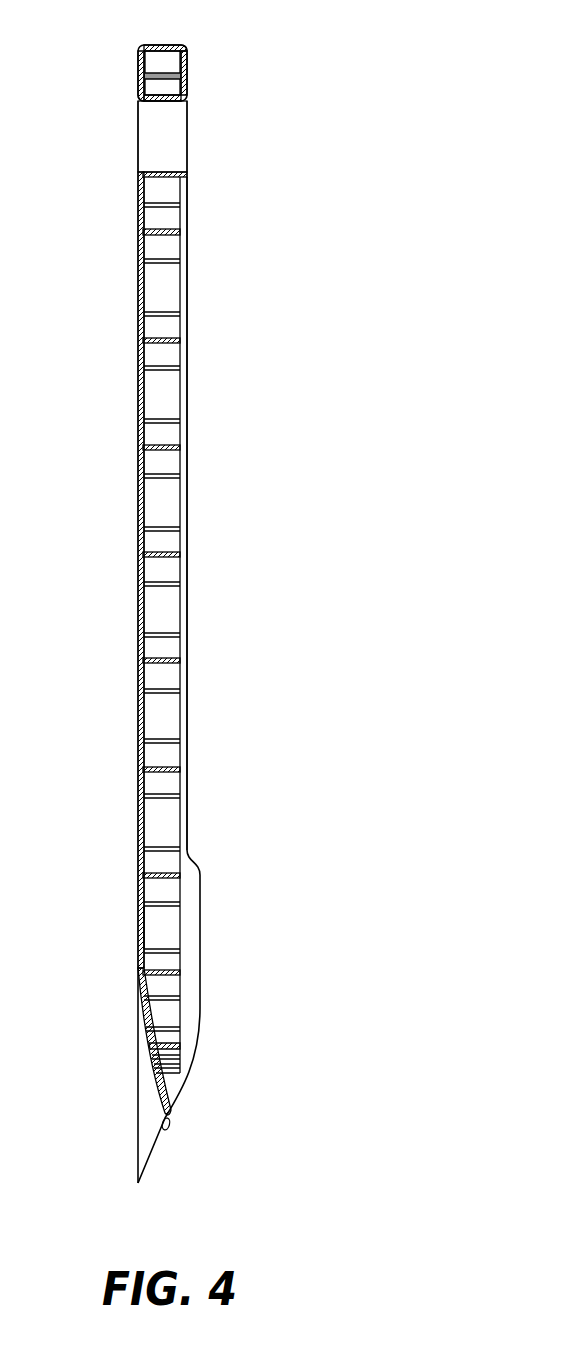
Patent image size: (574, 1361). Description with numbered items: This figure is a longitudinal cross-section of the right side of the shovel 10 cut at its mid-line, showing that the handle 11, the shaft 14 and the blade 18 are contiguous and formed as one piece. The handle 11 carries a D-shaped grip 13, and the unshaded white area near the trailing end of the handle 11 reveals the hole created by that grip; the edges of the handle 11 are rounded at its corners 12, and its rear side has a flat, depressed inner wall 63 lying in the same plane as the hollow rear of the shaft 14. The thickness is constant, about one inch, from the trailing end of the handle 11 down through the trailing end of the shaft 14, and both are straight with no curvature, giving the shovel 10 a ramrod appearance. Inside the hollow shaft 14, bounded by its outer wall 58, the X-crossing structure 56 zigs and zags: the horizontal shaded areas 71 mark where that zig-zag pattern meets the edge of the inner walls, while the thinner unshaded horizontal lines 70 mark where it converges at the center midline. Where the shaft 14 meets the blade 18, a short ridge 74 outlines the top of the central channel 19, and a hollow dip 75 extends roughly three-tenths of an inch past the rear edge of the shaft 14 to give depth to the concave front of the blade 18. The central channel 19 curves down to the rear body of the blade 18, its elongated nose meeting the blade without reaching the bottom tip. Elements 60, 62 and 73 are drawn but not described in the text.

The shovel 10 is at (208, 642).
The handle 11 is at (187, 120).
The corners 12 is at (166, 73).
The D-shaped grip 13 is at (160, 133).
The shaft 14 is at (187, 456).
The blade 18 is at (138, 1129).
The central channel 19 is at (145, 1035).
The X-crossing structure 56 is at (166, 72).
The outer wall 58 is at (170, 923).
The hatched spacer band 60 is at (165, 878).
The inner lumen wall 62 is at (178, 497).
The inner wall 63 is at (187, 64).
The thinner unshaded horizontal lines 70 is at (165, 366).
The horizontal shaded areas 71 is at (137, 352).
The tip aperture 73 is at (168, 1130).
The short ridge 74 is at (137, 827).
The hollow dip 75 is at (193, 862).